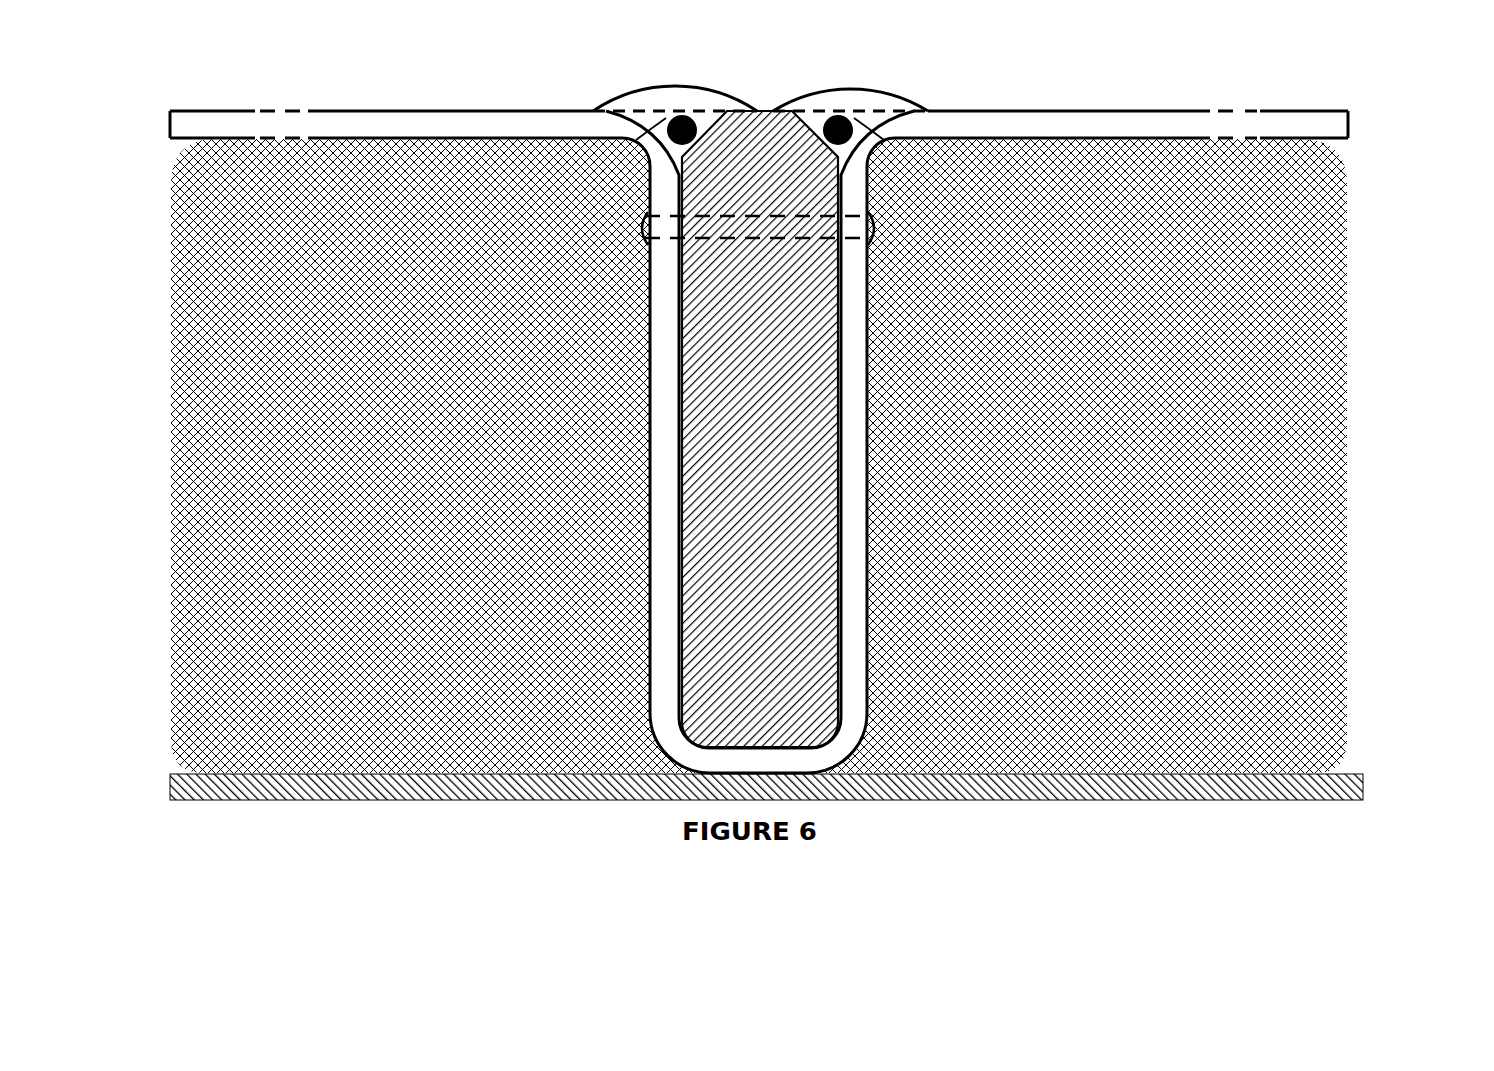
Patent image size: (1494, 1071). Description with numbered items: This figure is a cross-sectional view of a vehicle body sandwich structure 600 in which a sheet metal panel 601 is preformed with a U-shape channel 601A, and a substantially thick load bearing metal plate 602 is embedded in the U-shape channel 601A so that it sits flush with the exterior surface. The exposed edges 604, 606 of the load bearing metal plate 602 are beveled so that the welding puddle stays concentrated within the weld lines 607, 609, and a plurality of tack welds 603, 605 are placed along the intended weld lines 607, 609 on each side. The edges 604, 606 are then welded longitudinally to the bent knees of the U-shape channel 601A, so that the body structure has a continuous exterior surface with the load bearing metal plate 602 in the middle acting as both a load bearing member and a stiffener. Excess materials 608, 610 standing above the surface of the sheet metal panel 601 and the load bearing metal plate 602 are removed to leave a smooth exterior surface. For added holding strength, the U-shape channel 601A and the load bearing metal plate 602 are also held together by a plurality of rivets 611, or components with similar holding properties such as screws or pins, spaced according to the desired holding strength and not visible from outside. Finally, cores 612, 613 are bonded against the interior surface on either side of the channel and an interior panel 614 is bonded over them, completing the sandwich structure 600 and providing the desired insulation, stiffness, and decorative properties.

The sandwich structure 600 is at (1010, 90).
The sheet metal panel 601 is at (482, 116).
The U-shape channel 601A is at (662, 383).
The load bearing metal plate 602 is at (812, 332).
The tack weld 603 is at (664, 126).
The edge of the load bearing metal plate 604 is at (655, 165).
The tack weld 605 is at (855, 128).
The edge of the load bearing metal plate 606 is at (866, 165).
The weld line 607 is at (667, 98).
The excess material 608 is at (688, 92).
The weld line 609 is at (843, 102).
The excess material 610 is at (837, 95).
The rivet 611 is at (640, 231).
The core 612 is at (197, 480).
The core 613 is at (1300, 447).
The interior panel 614 is at (1353, 782).